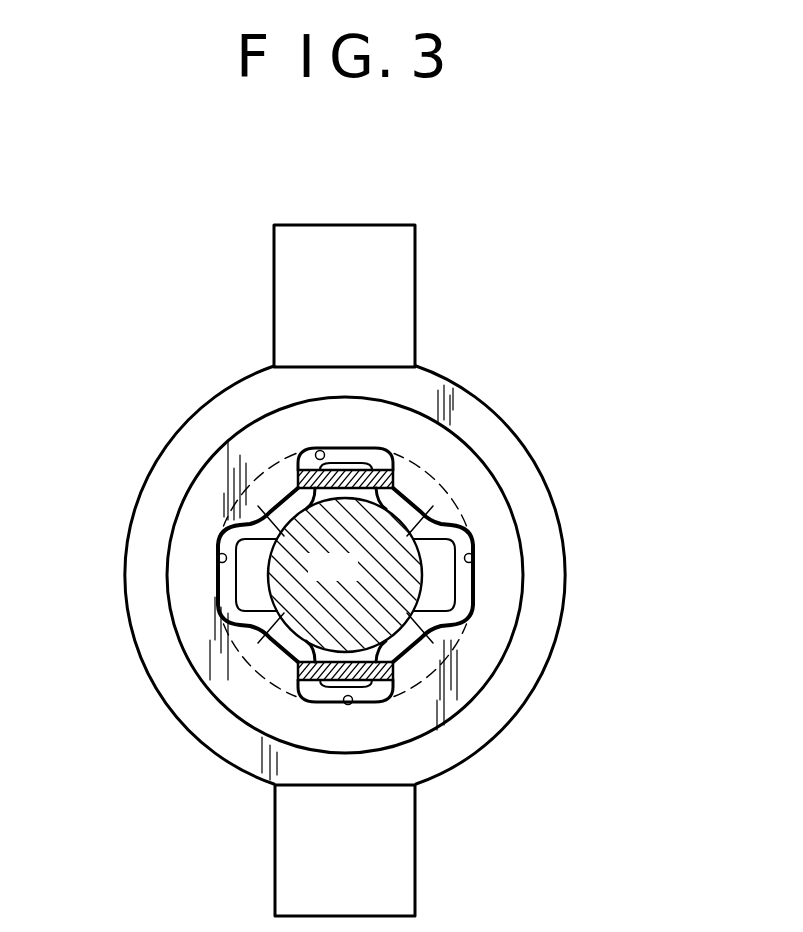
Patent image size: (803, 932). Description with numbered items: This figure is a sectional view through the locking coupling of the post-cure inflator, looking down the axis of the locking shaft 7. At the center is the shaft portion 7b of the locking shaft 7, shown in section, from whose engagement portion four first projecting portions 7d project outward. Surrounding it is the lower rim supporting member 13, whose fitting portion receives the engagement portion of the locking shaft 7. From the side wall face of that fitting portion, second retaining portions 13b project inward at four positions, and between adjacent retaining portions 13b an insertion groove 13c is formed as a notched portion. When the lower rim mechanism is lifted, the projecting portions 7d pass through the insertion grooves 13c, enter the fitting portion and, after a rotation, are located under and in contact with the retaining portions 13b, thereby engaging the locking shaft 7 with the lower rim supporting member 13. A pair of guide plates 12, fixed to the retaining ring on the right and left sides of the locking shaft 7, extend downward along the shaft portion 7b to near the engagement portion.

The locking shaft 7 is at (432, 580).
The shaft portion 7b is at (393, 530).
The first projecting portions 7d is at (348, 466).
The guide plates 12 is at (392, 462).
The lower rim supporting member 13 is at (520, 685).
The second retaining portions 13b is at (280, 540).
The insertion grooves 13c is at (307, 452).